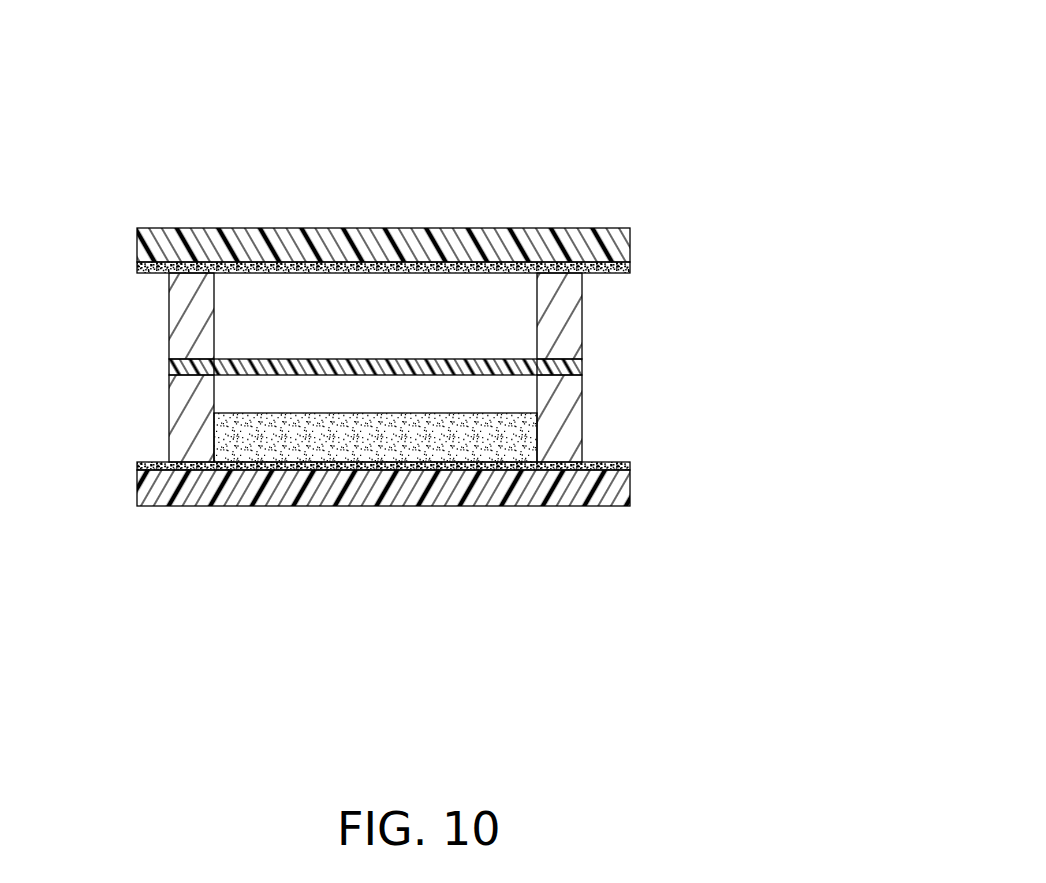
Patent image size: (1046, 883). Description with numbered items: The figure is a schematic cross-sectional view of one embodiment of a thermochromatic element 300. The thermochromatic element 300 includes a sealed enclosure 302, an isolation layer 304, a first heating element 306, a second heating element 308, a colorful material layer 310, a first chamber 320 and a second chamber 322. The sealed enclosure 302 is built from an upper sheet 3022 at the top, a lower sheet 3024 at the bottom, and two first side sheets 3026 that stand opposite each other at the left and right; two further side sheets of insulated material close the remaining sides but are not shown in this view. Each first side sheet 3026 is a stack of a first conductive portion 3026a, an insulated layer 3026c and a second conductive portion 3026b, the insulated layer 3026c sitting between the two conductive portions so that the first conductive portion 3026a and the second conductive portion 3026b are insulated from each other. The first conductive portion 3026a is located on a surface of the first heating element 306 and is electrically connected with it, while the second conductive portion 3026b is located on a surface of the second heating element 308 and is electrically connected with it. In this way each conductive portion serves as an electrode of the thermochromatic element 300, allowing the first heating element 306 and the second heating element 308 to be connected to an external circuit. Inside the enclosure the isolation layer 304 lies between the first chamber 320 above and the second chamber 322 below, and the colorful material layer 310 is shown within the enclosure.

The thermochromatic element 300 is at (458, 303).
The sealed enclosure 302 is at (507, 364).
The upper sheet 3022 is at (613, 245).
The lower sheet 3024 is at (632, 478).
The first side sheets 3026 is at (484, 367).
The first conductive portion 3026a is at (558, 318).
The second conductive portion 3026b is at (563, 428).
The insulated layer 3026c is at (553, 375).
The isolation layer 304 is at (233, 378).
The first heating element 306 is at (145, 266).
The second heating element 308 is at (140, 466).
The colorful material layer 310 is at (288, 288).
The first chamber 320 is at (232, 283).
The second chamber 322 is at (237, 403).